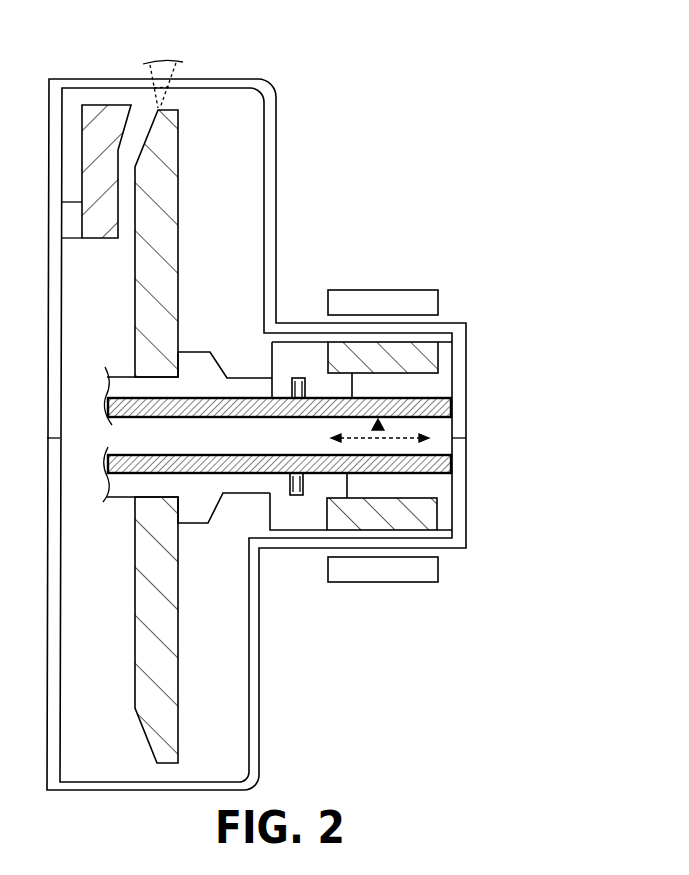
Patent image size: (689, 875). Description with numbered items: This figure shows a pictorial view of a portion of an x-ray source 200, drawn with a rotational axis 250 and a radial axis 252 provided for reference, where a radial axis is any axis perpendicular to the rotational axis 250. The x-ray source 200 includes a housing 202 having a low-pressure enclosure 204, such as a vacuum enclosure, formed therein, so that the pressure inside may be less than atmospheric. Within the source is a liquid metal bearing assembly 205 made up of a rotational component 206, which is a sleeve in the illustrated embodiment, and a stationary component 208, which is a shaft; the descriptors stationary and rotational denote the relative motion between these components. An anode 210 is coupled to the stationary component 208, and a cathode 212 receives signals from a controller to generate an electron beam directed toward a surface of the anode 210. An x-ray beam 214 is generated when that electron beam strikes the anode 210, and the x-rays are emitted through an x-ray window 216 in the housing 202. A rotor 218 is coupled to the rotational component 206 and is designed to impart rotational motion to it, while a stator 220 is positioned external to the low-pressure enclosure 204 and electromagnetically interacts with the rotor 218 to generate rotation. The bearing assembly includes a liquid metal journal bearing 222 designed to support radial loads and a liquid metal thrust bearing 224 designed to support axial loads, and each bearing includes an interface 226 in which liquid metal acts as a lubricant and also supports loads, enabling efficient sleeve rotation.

The x-ray source 200 is at (498, 103).
The housing 202 is at (460, 368).
The low-pressure enclosure 204 is at (212, 208).
The liquid metal bearing assembly 205 is at (228, 348).
The rotational component 206 is at (238, 463).
The stationary component 208 is at (193, 515).
The anode 210 is at (165, 121).
The cathode 212 is at (110, 232).
The x-ray beam 214 is at (168, 94).
The x-ray window 216 is at (148, 78).
The rotor 218 is at (367, 372).
The stator 220 is at (352, 291).
The liquid metal journal bearing 222 is at (247, 385).
The liquid metal thrust bearing 224 is at (297, 376).
The interface 226 is at (299, 482).
The rotational axis 250 is at (342, 440).
The radial axis 252 is at (376, 424).